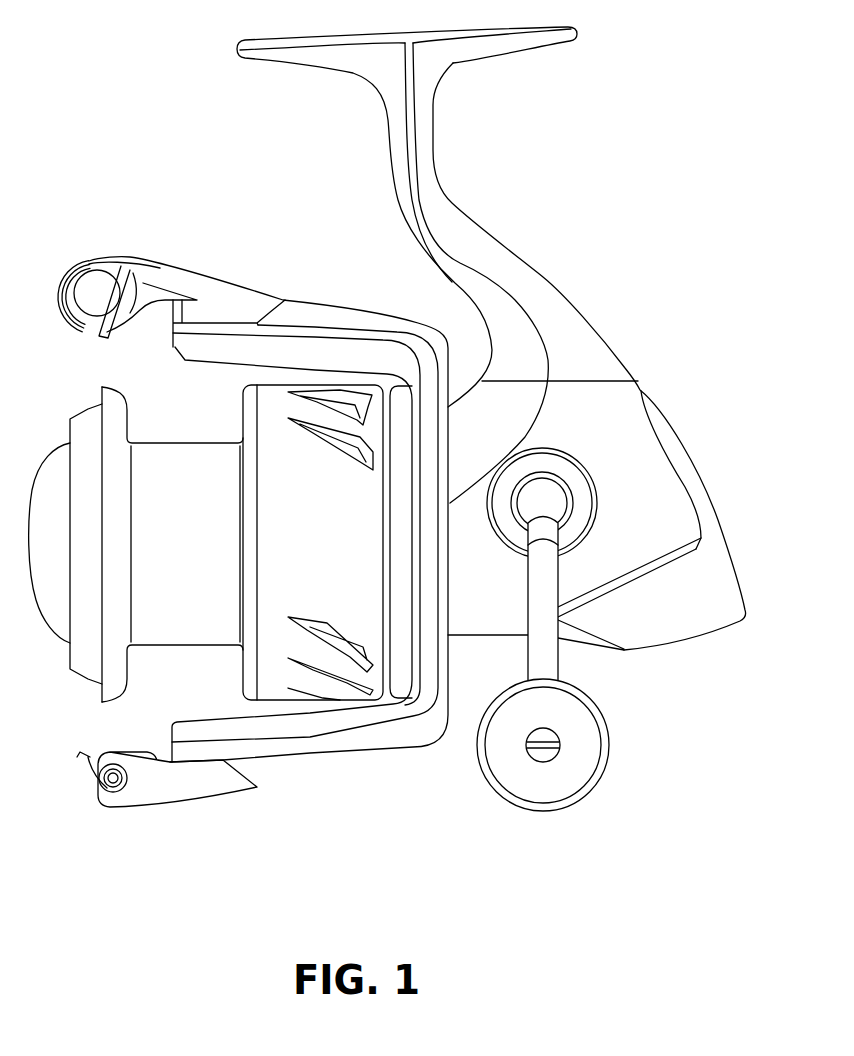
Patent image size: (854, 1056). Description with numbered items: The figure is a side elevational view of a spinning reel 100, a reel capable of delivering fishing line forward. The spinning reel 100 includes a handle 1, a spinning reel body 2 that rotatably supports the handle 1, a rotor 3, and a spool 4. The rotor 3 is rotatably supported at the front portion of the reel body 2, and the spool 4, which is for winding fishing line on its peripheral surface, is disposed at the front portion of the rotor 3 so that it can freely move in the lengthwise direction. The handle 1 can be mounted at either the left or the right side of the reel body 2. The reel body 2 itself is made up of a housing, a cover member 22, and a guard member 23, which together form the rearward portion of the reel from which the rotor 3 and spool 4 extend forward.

The spinning reel 100 is at (617, 153).
The handle 1 is at (558, 673).
The spinning reel body 2 is at (547, 272).
The cover member 22 is at (511, 405).
The guard member 23 is at (727, 563).
The rotor 3 is at (313, 310).
The spool 4 is at (177, 437).